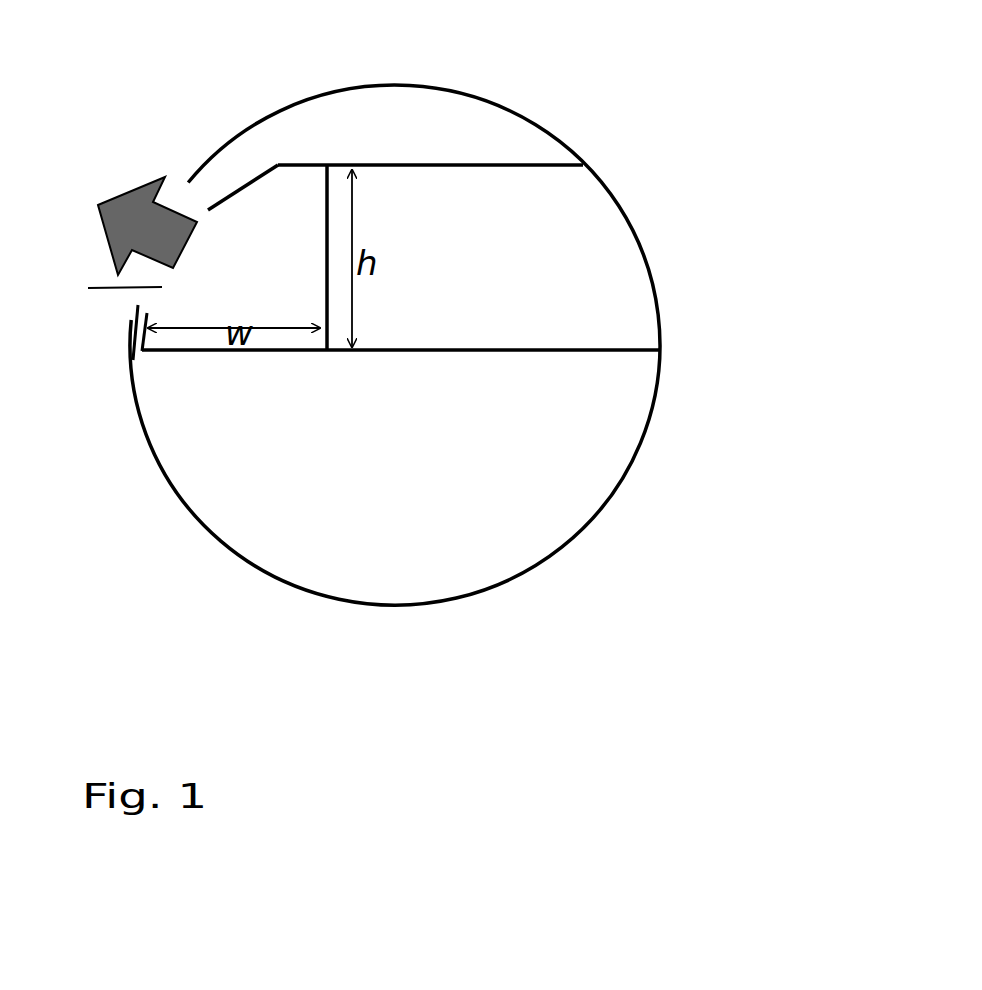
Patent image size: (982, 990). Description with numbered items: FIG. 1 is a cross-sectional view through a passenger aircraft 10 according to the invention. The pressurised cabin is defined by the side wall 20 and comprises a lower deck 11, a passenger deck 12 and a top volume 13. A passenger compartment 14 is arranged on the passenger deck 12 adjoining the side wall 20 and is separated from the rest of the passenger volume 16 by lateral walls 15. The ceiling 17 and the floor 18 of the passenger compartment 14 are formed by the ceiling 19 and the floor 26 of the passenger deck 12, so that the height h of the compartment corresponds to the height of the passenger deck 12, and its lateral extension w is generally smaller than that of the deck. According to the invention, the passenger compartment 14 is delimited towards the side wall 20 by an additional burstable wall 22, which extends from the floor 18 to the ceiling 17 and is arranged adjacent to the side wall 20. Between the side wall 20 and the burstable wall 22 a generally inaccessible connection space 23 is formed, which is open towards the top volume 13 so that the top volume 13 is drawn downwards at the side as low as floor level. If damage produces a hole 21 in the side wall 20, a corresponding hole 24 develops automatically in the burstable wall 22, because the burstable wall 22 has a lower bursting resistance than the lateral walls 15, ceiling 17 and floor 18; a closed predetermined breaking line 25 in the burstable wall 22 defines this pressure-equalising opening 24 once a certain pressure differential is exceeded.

The passenger aircraft 10 is at (551, 597).
The lower deck 11 is at (410, 519).
The passenger deck 12 is at (664, 272).
The top volume 13 is at (420, 154).
The passenger compartment 14 is at (250, 294).
The lateral walls 15 is at (325, 290).
The passenger volume 16 is at (480, 279).
The ceiling 17 is at (298, 167).
The floor 18 is at (300, 355).
The ceiling of the passenger deck 19 is at (493, 170).
The side wall 20 is at (138, 412).
The hole 21 is at (190, 193).
The burstable wall 22 is at (210, 188).
The connection space 23 is at (237, 187).
The hole 24 is at (101, 293).
The predetermined breaking line 25 is at (137, 315).
The floor of the passenger deck 26 is at (487, 353).